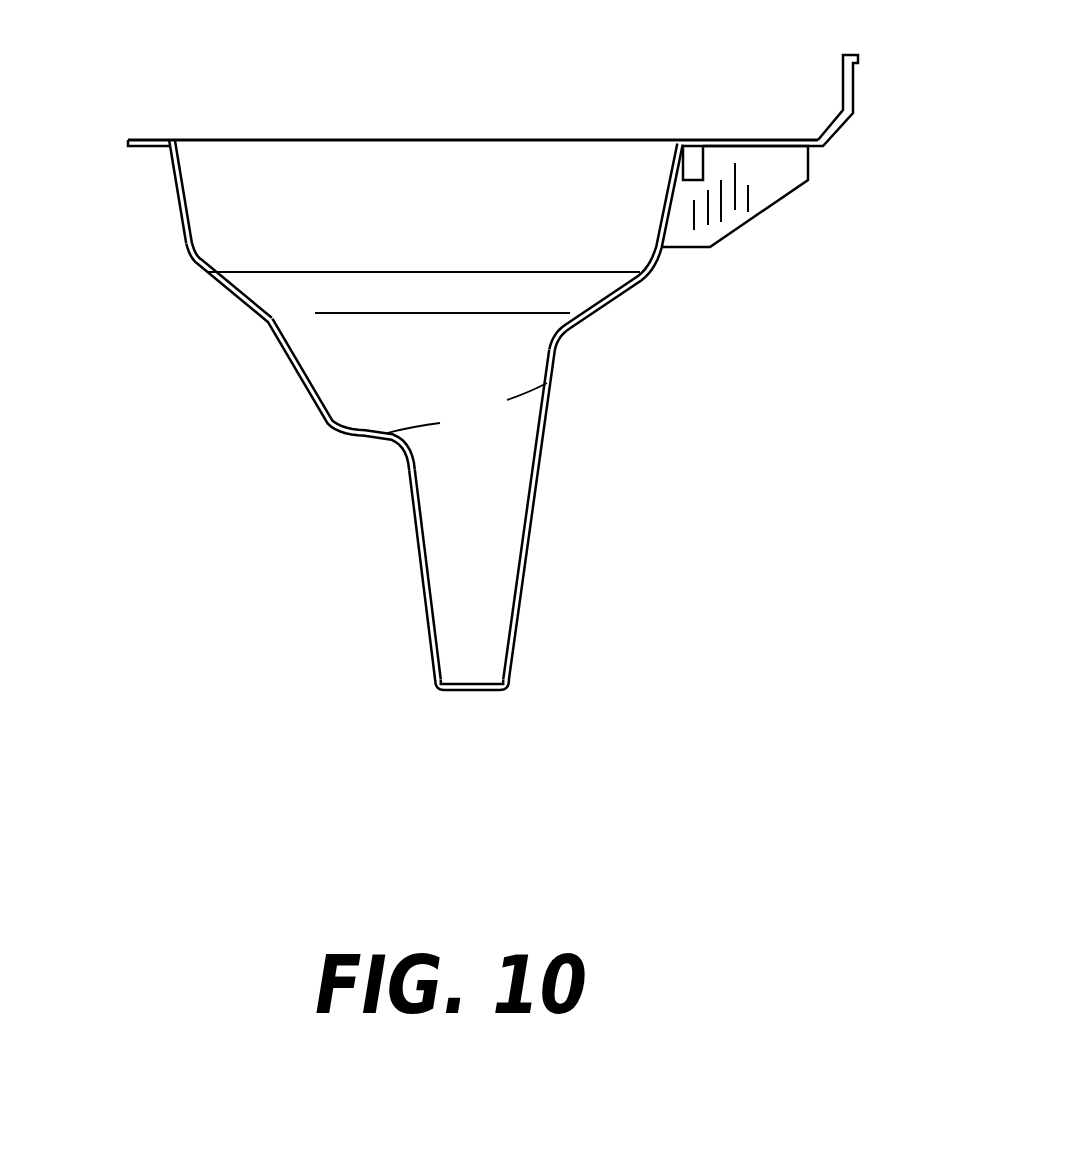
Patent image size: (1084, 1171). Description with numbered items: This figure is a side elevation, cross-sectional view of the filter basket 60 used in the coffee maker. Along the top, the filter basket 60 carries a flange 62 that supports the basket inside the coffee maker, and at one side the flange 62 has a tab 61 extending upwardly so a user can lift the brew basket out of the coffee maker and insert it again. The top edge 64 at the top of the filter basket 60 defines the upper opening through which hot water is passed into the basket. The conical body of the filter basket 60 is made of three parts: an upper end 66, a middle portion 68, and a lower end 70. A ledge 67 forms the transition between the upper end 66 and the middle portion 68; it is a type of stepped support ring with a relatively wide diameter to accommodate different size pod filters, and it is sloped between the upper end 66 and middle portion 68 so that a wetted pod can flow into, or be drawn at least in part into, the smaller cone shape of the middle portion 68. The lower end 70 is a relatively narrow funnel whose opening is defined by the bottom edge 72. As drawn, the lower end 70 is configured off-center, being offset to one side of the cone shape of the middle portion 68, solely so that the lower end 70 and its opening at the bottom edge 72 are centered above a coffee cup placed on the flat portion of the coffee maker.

The filter basket 60 is at (366, 124).
The tab 61 is at (853, 90).
The flange 62 is at (135, 139).
The top edge 64 is at (170, 139).
The upper end 66 is at (188, 253).
The ledge 67 is at (607, 307).
The middle portion 68 is at (310, 396).
The lower end 70 is at (420, 555).
The bottom edge 72 is at (447, 693).